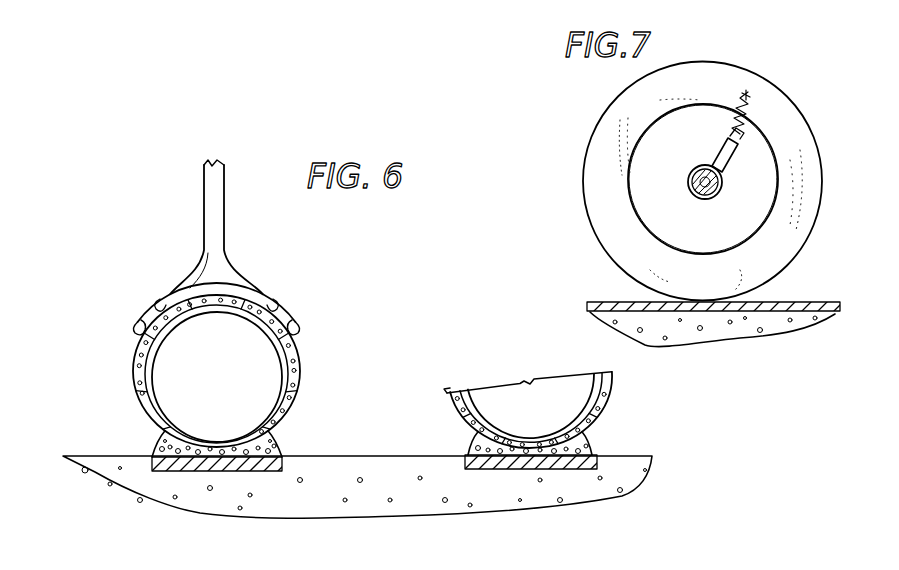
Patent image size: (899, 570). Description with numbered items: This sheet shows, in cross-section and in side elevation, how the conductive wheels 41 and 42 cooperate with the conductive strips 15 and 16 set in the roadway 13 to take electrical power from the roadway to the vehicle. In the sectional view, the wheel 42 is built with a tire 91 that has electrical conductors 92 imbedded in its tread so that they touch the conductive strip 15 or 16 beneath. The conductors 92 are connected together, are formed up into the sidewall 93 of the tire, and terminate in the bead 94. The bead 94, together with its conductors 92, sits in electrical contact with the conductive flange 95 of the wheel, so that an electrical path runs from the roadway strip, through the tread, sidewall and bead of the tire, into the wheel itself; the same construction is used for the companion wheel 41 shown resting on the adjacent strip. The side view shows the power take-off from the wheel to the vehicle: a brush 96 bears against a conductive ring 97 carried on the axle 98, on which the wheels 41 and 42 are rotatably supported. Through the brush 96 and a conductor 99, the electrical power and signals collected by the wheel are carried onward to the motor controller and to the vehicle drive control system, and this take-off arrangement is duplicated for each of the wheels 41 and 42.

In FIG. 6, the roadway 13 is at (380, 455).
In FIG. 7, the roadway 13 is at (710, 324).
In FIG. 6, the conductive strip 15 is at (513, 479).
In FIG. 6, the conductive strip 16 is at (211, 474).
In FIG. 6, the conductive wheel 41 is at (299, 286).
In FIG. 7, the conductive wheel 41 is at (576, 163).
In FIG. 6, the conductive wheel 42 is at (474, 372).
In FIG. 7, the conductive wheel 42 is at (703, 179).
In FIG. 6, the tire 91 is at (342, 376).
In FIG. 6, the electrical conductors 92 is at (183, 441).
In FIG. 6, the sidewall 93 is at (133, 362).
In FIG. 6, the bead 94 is at (157, 322).
In FIG. 6, the conductive flange 95 is at (140, 316).
In FIG. 7, the conductive flange 95 is at (694, 144).
In FIG. 7, the brush 96 is at (727, 160).
In FIG. 7, the conductive ring 97 is at (688, 181).
In FIG. 7, the axle 98 is at (698, 197).
In FIG. 7, the conductor 99 is at (749, 110).